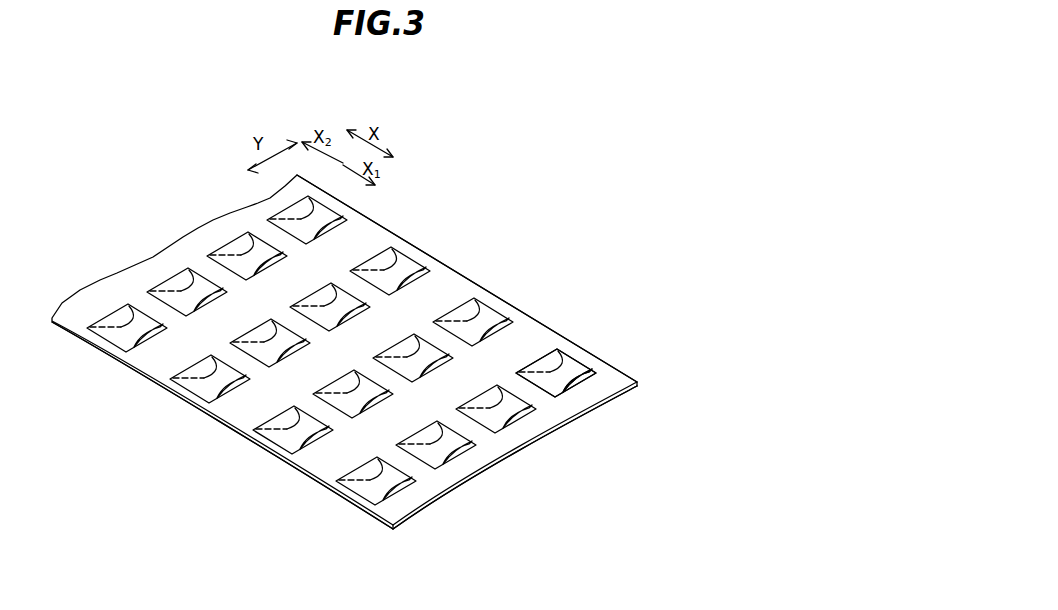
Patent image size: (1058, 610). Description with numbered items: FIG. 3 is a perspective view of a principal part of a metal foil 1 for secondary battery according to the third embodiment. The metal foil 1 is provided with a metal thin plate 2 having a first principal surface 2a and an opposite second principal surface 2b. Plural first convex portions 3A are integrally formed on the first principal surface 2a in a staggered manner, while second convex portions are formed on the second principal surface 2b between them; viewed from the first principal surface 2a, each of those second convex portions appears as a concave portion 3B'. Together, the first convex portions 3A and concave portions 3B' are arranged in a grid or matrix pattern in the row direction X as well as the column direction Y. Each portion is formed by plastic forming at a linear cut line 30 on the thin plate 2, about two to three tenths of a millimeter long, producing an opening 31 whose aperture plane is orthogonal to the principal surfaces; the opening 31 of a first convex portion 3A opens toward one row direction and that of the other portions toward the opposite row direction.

The metal foil for secondary battery 1 is at (508, 136).
The thin plate 2 is at (473, 275).
The first principal surface 2a is at (370, 232).
The second principal surface 2b is at (543, 433).
The first convex portion 3A is at (398, 270).
The concave portion 3B' is at (321, 355).
The cut line 30 is at (586, 383).
The opening 31 is at (577, 386).